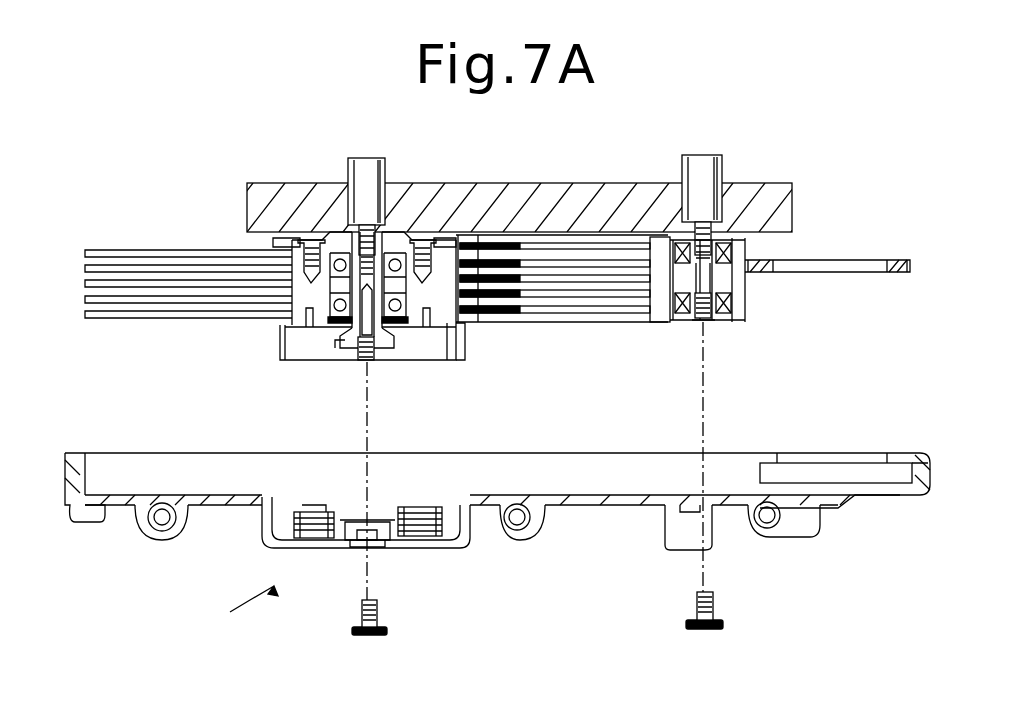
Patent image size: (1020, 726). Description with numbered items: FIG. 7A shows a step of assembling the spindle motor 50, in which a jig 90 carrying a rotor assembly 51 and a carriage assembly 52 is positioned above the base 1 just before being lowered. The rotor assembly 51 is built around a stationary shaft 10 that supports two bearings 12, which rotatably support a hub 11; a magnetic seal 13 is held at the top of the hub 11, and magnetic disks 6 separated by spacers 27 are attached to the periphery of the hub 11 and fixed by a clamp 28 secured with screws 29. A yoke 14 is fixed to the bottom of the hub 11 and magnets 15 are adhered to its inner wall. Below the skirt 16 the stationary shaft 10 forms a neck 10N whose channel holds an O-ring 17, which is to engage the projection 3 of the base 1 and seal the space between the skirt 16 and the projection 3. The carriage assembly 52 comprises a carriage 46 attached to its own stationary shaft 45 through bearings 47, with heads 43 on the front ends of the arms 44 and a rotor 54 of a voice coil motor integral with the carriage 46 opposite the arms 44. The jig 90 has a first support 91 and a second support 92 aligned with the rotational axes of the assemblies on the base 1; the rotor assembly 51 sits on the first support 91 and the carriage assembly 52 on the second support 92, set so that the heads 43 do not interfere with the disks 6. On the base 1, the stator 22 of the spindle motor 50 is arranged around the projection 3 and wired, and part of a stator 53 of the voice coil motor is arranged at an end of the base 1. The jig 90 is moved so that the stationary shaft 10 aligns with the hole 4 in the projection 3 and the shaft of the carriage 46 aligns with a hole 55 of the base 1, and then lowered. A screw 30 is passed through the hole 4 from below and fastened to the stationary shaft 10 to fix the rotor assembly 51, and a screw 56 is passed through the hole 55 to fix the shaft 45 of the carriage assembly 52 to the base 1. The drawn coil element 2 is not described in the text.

The base 1 is at (592, 510).
The coil 2 is at (443, 536).
The projection 3 is at (345, 538).
The hole 4 is at (362, 545).
The magnetic disks 6 is at (158, 250).
The stationary shaft 10 is at (380, 362).
The neck 10N is at (370, 368).
The hub 11 is at (408, 340).
The bearings 12 is at (345, 268).
The magnetic seal 13 is at (330, 316).
The yoke 14 is at (460, 330).
The magnets 15 is at (450, 352).
The skirt 16 is at (398, 362).
The O-ring 17 is at (345, 340).
The stator 22 is at (265, 520).
The spacers 27 is at (426, 236).
The clamp 28 is at (272, 242).
The screws 29 is at (310, 245).
The screw 30 is at (378, 612).
The heads 43 is at (478, 322).
The arms 44 is at (572, 322).
The stationary shaft 45 is at (692, 320).
The carriage 46 is at (660, 322).
The bearings 47 is at (716, 320).
The spindle motor 50 is at (253, 603).
The rotor assembly 51 is at (258, 360).
The carriage assembly 52 is at (765, 308).
The stator 53 is at (833, 470).
The rotor 54 is at (835, 273).
The hole 55 is at (676, 545).
The screw 56 is at (714, 602).
The jig 90 is at (556, 178).
The first support 91 is at (362, 165).
The second support 92 is at (700, 165).